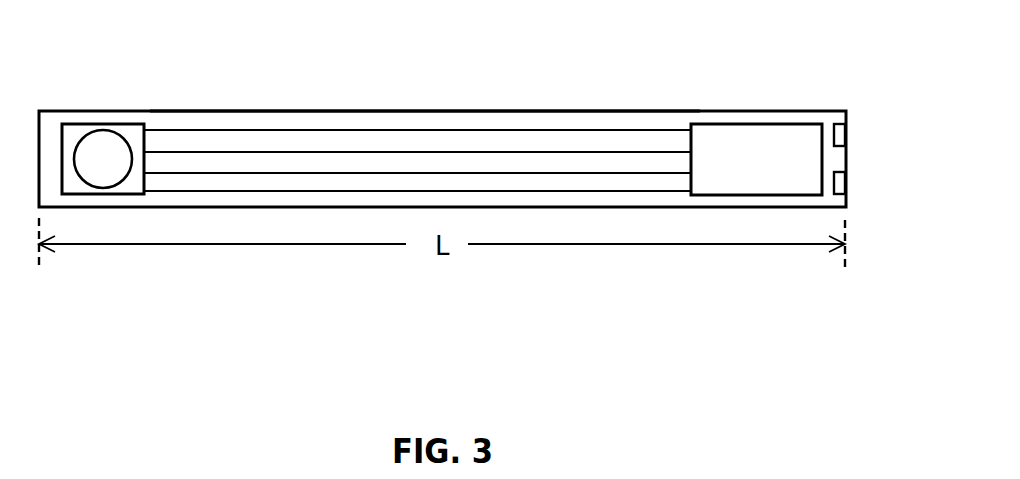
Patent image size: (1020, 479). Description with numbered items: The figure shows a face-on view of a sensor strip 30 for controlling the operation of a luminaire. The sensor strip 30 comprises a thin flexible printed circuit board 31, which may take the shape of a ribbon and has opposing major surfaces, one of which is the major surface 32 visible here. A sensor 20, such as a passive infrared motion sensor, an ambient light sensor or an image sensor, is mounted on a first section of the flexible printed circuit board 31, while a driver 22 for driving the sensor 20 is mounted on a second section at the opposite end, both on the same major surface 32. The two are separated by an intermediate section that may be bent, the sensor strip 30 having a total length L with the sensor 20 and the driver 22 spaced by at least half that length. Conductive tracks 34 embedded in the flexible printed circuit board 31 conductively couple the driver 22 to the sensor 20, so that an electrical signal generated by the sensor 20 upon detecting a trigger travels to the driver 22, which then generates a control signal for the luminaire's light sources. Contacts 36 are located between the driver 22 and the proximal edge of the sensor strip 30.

The sensor 20 is at (145, 123).
The driver 22 is at (767, 132).
The sensor strip 30 is at (466, 376).
The flexible printed circuit board 31 is at (543, 127).
The major surface 32 is at (237, 118).
The conductive tracks 34 is at (397, 130).
The contacts 36 is at (845, 131).